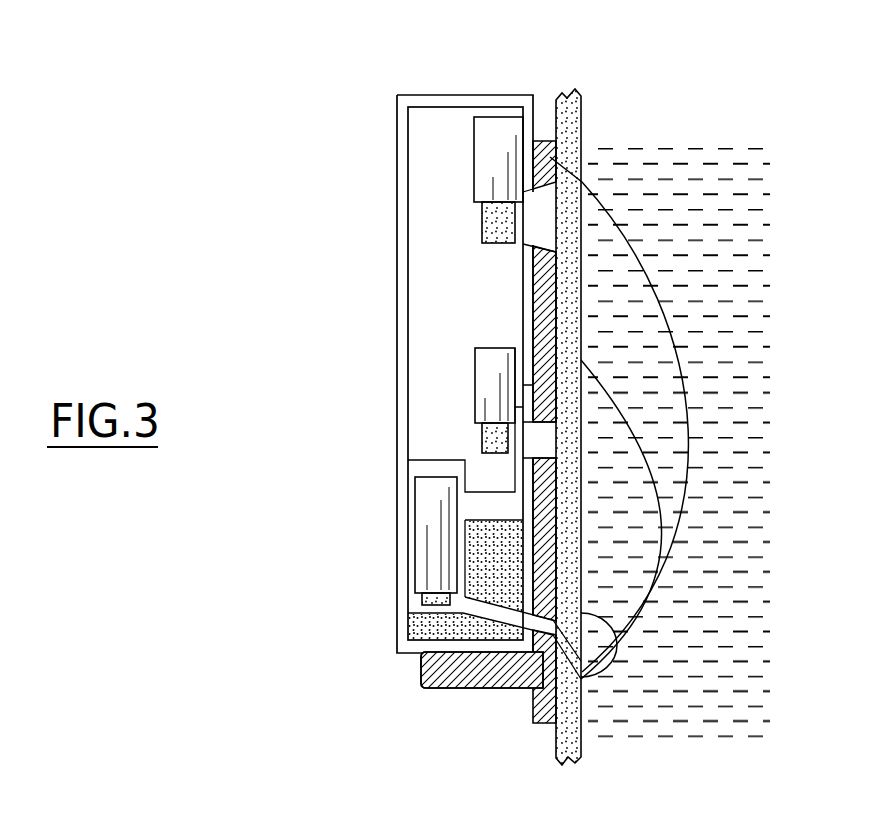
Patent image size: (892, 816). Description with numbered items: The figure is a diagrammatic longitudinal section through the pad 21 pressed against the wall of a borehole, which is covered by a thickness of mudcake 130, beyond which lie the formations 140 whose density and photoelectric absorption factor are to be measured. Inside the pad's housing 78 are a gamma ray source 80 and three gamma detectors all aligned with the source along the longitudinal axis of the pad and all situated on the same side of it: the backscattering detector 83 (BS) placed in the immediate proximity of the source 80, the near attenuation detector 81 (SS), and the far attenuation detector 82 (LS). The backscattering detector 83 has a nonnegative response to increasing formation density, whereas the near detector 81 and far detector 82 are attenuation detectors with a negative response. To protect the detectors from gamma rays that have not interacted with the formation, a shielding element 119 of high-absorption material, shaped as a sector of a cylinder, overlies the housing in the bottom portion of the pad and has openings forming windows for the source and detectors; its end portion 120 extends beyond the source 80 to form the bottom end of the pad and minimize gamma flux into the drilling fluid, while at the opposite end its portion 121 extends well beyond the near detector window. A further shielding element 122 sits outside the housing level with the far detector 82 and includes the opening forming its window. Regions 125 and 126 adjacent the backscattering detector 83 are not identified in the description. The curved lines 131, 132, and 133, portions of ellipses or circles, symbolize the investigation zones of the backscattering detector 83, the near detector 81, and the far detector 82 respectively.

The pad 21 is at (463, 92).
The housing 78 is at (397, 375).
The far detector 82 is at (476, 221).
The near detector 81 is at (476, 443).
The backscattering detector 83 is at (420, 598).
The gamma ray source 80 is at (530, 661).
The shielding element 119 is at (550, 500).
The end portion 120 is at (535, 702).
The portion 121 is at (555, 297).
The shielding element 122 is at (540, 141).
The filler region 125 is at (500, 565).
The lower filler region 126 is at (500, 622).
The mudcake 130 is at (576, 223).
The investigation zone curve 131 is at (610, 665).
The investigation zone curve 132 is at (650, 458).
The investigation zone curve 133 is at (675, 320).
The formations 140 is at (717, 190).